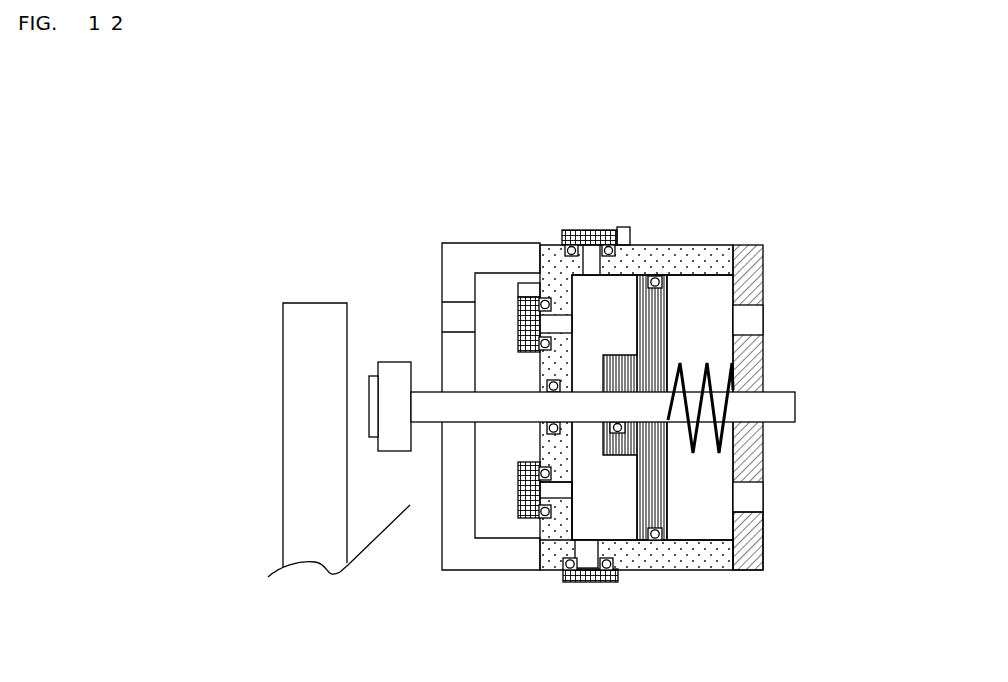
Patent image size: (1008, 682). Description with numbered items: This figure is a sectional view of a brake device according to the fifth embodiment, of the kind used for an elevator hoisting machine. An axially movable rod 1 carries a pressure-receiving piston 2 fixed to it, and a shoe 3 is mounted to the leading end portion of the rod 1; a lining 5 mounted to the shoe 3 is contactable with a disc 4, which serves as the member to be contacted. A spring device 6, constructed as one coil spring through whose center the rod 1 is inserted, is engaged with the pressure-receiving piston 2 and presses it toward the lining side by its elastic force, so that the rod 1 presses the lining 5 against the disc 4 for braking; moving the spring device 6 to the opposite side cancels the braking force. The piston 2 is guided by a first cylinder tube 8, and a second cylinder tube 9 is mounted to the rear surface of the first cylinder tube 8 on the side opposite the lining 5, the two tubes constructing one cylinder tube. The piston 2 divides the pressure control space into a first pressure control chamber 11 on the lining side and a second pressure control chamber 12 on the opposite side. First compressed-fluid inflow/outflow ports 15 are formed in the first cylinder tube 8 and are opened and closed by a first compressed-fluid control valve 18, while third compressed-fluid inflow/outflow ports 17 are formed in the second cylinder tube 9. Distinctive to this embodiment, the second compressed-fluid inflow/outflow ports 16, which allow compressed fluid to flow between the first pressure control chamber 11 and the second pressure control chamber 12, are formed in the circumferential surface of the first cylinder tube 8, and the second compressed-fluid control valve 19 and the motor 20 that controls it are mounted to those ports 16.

The rod 1 is at (780, 408).
The pressure-receiving piston 2 is at (643, 337).
The shoe 3 is at (395, 415).
The disc 4 is at (313, 390).
The lining 5 is at (372, 395).
The spring device 6 is at (710, 373).
The first cylinder tube 8 is at (540, 537).
The second cylinder tube 9 is at (745, 557).
The first pressure control chamber 11 is at (598, 492).
The second pressure control chamber 12 is at (685, 508).
The first compressed-fluid inflow/outflow ports 15 is at (550, 492).
The second compressed-fluid inflow/outflow ports 16 is at (545, 255).
The third compressed-fluid inflow/outflow ports 17 is at (748, 498).
The first compressed-fluid control valve 18 is at (520, 317).
The second compressed-fluid control valve 19 is at (593, 230).
The motor 20 is at (525, 283).